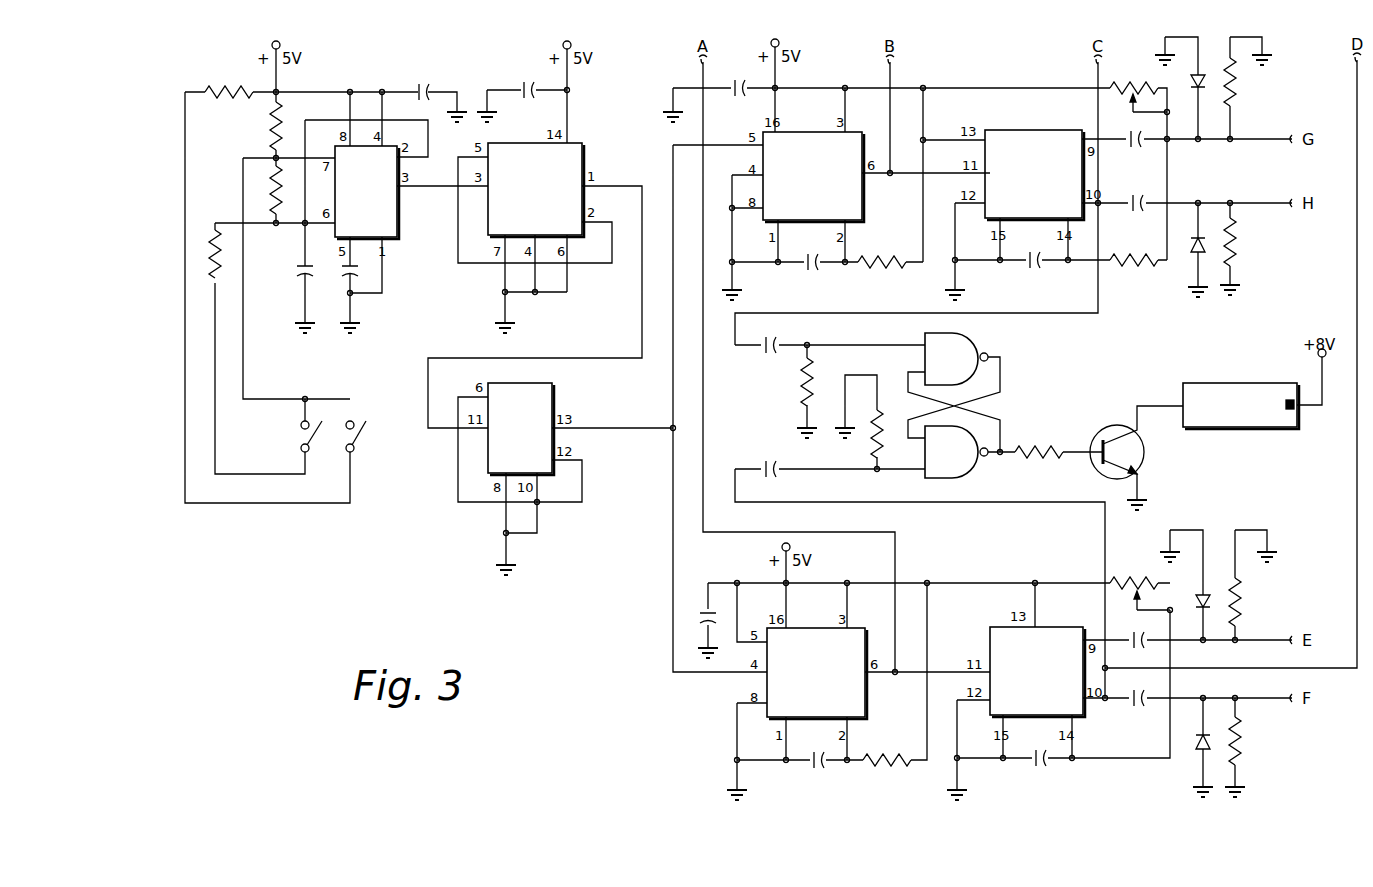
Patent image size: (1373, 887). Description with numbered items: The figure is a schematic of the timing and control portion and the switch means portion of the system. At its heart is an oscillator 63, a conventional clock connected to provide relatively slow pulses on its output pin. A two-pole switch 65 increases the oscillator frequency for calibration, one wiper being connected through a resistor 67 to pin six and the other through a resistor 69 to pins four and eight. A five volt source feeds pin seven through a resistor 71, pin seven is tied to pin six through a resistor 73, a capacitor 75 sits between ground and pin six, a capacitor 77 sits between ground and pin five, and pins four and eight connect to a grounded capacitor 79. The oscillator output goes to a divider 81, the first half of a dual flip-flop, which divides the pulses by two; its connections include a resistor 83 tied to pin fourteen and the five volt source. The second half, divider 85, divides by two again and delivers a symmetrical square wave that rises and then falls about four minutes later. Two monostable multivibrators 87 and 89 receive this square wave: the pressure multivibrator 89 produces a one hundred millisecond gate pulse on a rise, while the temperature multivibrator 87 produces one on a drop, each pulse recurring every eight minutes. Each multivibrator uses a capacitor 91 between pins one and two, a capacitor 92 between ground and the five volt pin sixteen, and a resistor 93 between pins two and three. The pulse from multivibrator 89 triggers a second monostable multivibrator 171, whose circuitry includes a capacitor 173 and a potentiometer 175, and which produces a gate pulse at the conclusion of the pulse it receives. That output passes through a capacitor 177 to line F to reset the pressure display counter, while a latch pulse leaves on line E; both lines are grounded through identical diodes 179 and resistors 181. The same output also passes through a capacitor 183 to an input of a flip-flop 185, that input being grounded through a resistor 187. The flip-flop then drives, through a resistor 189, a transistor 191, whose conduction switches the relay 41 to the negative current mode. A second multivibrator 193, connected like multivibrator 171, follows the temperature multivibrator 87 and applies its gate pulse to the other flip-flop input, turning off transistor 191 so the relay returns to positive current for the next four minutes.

The relay 41 is at (1241, 396).
The oscillator 63 is at (389, 192).
The switch 65 is at (351, 446).
The resistor 67 is at (245, 270).
The resistor 69 is at (218, 73).
The resistor 71 is at (246, 126).
The resistor 73 is at (240, 190).
The capacitor 75 is at (282, 262).
The capacitor 77 is at (337, 288).
The capacitor 79 is at (402, 72).
The divider 81 is at (557, 176).
The resistor 83 is at (508, 71).
The divider 85 is at (546, 424).
The temperature monostable multivibrator 87 is at (813, 158).
The pressure monostable multivibrator 89 is at (840, 674).
The capacitor 91 is at (794, 279).
The capacitor 92 is at (732, 71).
The resistor 93 is at (872, 280).
The second monostable multivibrator 171 is at (1012, 658).
The capacitor 173 is at (1021, 776).
The potentiometer 175 is at (1134, 560).
The capacitor 177 is at (1132, 722).
The diode 179 is at (1217, 631).
The resistor 181 is at (1266, 602).
The capacitor 183 is at (752, 451).
The flip-flop 185 is at (984, 410).
The resistor 187 is at (845, 441).
The resistor 189 is at (1039, 431).
The transistor 191 is at (1144, 452).
The second multivibrator 193 is at (1034, 156).